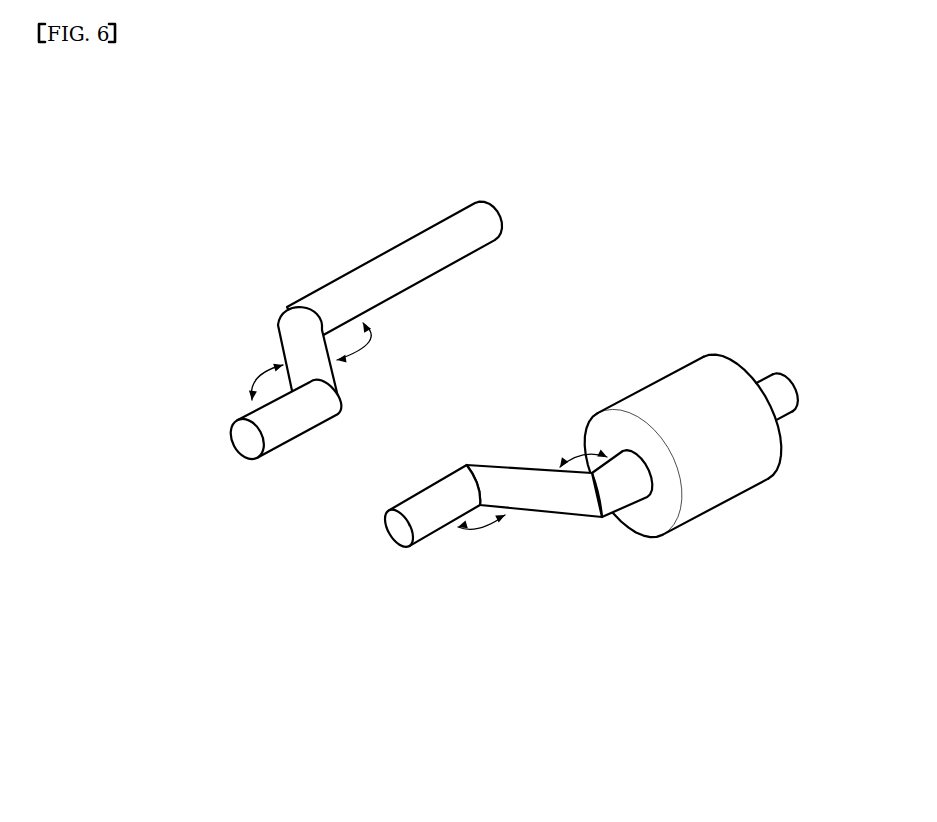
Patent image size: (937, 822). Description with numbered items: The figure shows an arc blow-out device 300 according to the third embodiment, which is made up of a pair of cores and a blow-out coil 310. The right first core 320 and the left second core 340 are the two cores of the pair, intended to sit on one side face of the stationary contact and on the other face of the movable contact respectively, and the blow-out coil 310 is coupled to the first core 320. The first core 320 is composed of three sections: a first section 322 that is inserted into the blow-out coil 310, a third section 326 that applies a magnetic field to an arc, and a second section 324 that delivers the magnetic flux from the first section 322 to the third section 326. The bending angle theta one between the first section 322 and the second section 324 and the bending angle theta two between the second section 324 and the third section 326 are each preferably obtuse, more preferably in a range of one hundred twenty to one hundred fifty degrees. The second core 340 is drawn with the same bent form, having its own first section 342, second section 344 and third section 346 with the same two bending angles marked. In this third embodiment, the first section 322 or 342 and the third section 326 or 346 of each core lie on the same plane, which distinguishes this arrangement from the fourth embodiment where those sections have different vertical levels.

The blow-out device 300 is at (632, 187).
The blow-out coil 310 is at (720, 487).
The first core 320 is at (500, 682).
The first section 322 is at (622, 490).
The second section 324 is at (540, 498).
The third section 326 is at (428, 520).
The second core 340 is at (122, 305).
The first section 342 is at (340, 287).
The second section 344 is at (295, 348).
The third section 346 is at (277, 408).